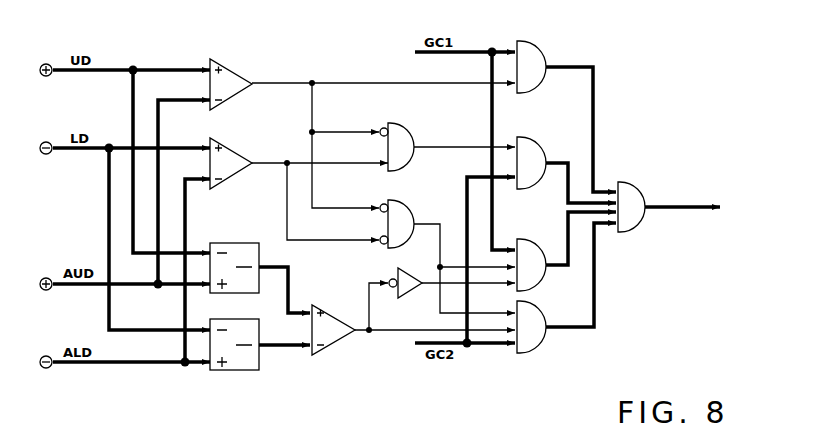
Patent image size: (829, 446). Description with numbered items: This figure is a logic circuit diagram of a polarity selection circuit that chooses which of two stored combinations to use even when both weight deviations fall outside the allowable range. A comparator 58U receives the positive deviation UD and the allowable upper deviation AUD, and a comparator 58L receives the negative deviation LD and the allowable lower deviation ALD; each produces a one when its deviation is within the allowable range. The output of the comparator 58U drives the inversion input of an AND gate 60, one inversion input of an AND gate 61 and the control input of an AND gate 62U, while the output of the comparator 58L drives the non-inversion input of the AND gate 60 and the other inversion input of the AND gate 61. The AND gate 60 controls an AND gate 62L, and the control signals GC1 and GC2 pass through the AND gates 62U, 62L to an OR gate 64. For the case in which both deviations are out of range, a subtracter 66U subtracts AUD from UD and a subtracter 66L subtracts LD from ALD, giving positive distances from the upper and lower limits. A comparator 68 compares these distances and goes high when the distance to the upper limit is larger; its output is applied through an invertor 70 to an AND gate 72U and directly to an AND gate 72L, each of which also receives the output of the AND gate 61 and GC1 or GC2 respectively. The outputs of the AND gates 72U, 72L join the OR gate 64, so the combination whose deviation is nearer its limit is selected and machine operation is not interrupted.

The comparator 58U is at (243, 67).
The comparator 58L is at (242, 140).
The AND gate 60 is at (416, 128).
The AND gate 61 is at (416, 201).
The AND gate 62U is at (545, 55).
The AND gate 62L is at (537, 138).
The OR gate 64 is at (641, 186).
The subtracter 66U is at (236, 243).
The subtracter 66L is at (236, 371).
The comparator 68 is at (331, 312).
The invertor 70 is at (405, 296).
The AND gate 72U is at (527, 239).
The AND gate 72L is at (541, 353).